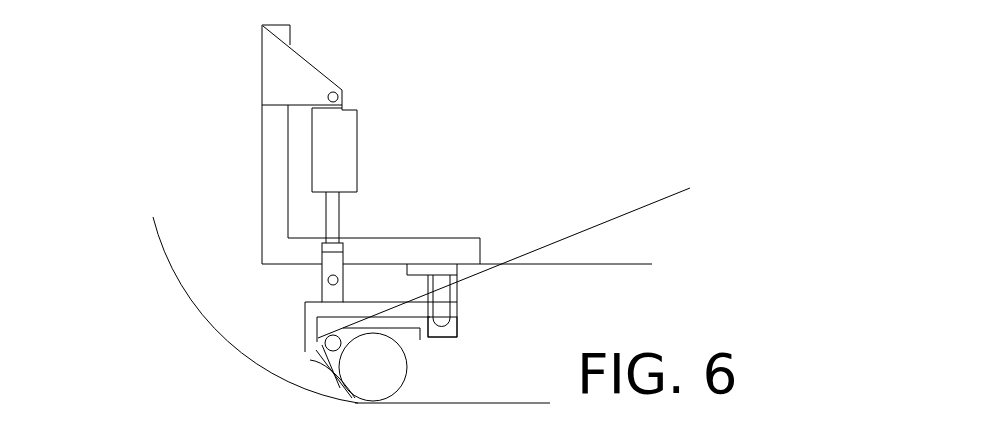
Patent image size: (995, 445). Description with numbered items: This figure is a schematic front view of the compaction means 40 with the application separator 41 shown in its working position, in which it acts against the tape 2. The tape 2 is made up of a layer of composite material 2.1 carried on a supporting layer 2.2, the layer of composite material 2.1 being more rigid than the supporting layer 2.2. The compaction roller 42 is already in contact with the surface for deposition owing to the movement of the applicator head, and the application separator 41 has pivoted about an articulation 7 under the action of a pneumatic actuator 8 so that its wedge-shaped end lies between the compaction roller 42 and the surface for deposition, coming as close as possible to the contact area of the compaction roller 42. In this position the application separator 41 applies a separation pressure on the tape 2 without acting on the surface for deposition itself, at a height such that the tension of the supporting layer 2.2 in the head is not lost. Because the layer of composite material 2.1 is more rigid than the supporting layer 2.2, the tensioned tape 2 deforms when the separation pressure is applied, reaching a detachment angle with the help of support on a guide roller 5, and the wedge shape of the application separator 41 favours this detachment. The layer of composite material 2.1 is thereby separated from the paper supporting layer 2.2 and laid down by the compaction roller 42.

The tape 2 is at (180, 285).
The layer of composite material 2.1 is at (532, 403).
The supporting layer 2.2 is at (607, 222).
The guide roller 5 is at (337, 343).
The articulation 7 is at (442, 322).
The pneumatic actuator 8 is at (335, 153).
The compaction means 40 is at (540, 147).
The application separator 41 is at (318, 353).
The compaction roller 42 is at (372, 390).